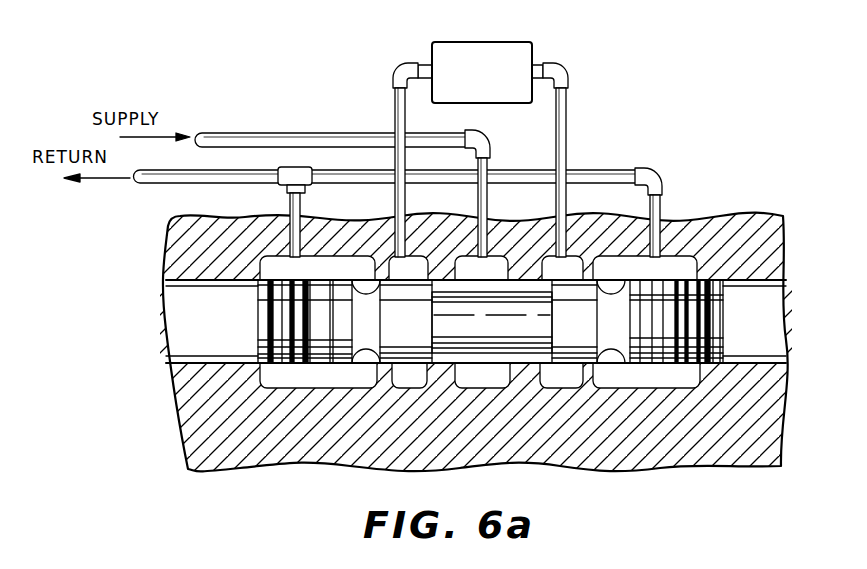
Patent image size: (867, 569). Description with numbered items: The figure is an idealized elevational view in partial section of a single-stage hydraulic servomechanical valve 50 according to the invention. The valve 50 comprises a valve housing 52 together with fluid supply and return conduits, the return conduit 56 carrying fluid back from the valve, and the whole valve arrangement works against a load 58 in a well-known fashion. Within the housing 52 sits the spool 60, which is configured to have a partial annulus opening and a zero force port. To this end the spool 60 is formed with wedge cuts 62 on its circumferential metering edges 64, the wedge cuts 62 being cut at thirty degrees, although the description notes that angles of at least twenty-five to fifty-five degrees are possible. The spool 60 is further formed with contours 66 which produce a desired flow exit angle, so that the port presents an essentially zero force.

The single stage valve 50 is at (750, 184).
The valve housing 52 is at (172, 253).
The fluid return conduit 56 is at (333, 184).
The load 58 is at (521, 42).
The spool 60 is at (775, 321).
The wedge cuts 62 is at (600, 279).
The circumferential metering edges 64 is at (381, 327).
The contours 66 is at (357, 280).